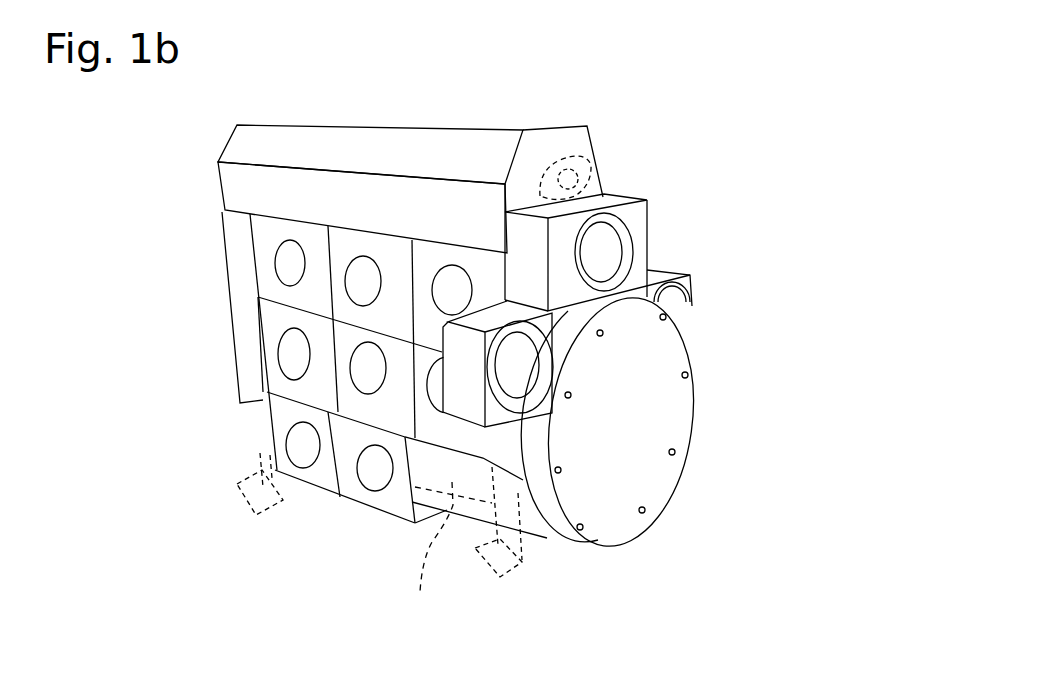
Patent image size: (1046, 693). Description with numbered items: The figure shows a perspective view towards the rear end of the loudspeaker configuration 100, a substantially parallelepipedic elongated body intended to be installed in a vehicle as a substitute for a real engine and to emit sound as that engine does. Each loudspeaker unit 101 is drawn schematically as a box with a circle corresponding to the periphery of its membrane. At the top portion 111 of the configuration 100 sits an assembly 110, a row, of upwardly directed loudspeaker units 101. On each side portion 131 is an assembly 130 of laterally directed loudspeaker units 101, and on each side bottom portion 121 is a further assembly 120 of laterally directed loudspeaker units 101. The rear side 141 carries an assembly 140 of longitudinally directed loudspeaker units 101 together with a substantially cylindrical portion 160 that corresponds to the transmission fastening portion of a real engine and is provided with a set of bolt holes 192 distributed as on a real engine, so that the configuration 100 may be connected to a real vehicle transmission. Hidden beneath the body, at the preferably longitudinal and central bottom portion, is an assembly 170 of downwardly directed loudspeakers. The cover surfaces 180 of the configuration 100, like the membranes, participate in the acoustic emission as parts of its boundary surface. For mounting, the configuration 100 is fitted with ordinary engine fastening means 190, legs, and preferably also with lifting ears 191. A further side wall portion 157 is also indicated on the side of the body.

The loudspeaker configuration 100 is at (719, 95).
The assembly of upwardly directed loudspeaker units 110 is at (418, 123).
The top portion 111 is at (592, 169).
The lifting ears 191 is at (592, 152).
The loudspeaker unit 101 is at (287, 253).
The side wall 157 is at (227, 280).
The cover surfaces 180 is at (243, 297).
The side portion 131 is at (270, 320).
The assembly of laterally directed loudspeaker units 130 is at (267, 350).
The side bottom portion 121 is at (277, 417).
The assembly of laterally directed loudspeaker units 120 is at (349, 499).
The rear side 141 is at (640, 223).
The assembly of longitudinally directed loudspeaker units 140 is at (637, 263).
The cylindrical portion 160 is at (642, 530).
The bolt holes 192 is at (686, 372).
The engine fastening means 190 is at (245, 472).
The assembly of downwardly directed loudspeakers 170 is at (428, 559).